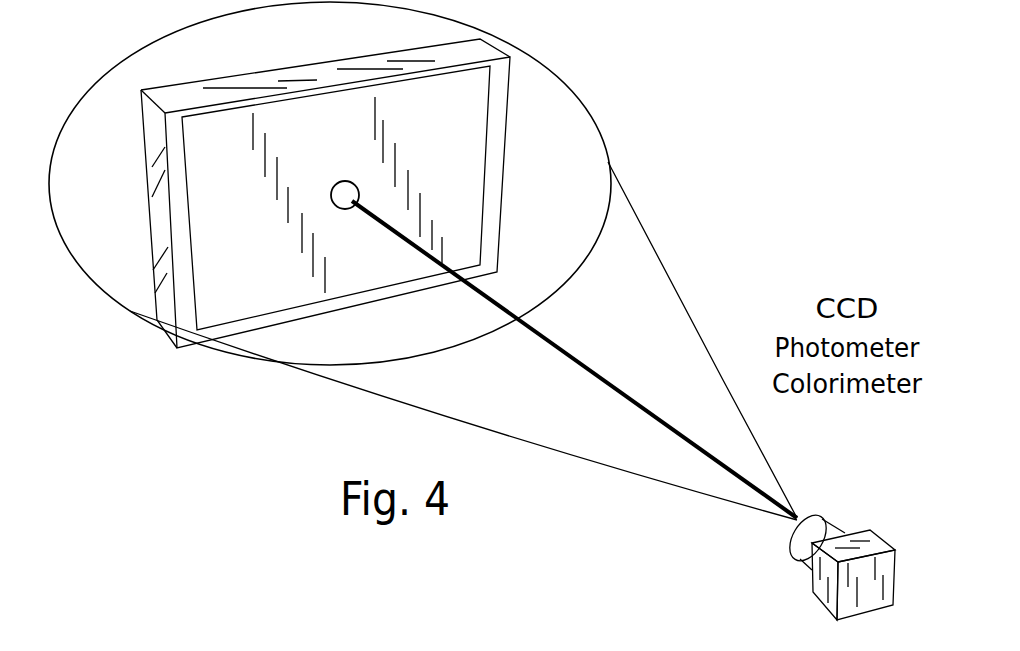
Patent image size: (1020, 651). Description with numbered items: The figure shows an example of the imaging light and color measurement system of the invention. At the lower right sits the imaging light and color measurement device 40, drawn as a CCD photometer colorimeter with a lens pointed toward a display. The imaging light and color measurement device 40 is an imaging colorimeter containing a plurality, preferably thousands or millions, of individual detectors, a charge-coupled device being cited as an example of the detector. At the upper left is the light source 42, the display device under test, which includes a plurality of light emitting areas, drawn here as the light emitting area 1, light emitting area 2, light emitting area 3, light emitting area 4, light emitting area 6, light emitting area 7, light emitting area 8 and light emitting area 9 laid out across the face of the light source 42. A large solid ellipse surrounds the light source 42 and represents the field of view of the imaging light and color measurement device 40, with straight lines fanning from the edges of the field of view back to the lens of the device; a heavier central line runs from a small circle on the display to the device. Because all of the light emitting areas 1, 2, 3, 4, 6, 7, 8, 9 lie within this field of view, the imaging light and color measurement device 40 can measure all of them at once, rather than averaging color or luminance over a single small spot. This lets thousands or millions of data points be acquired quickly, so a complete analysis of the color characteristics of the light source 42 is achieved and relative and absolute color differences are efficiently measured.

The imaging light and color measurement device 40 is at (843, 523).
The light source 42 is at (512, 62).
The light emitting area 1 is at (239, 145).
The light emitting area 2 is at (353, 130).
The light emitting area 3 is at (429, 138).
The light emitting area 4 is at (252, 197).
The light emitting area 6 is at (434, 203).
The light emitting area 7 is at (259, 260).
The light emitting area 8 is at (331, 263).
The light emitting area 9 is at (448, 242).